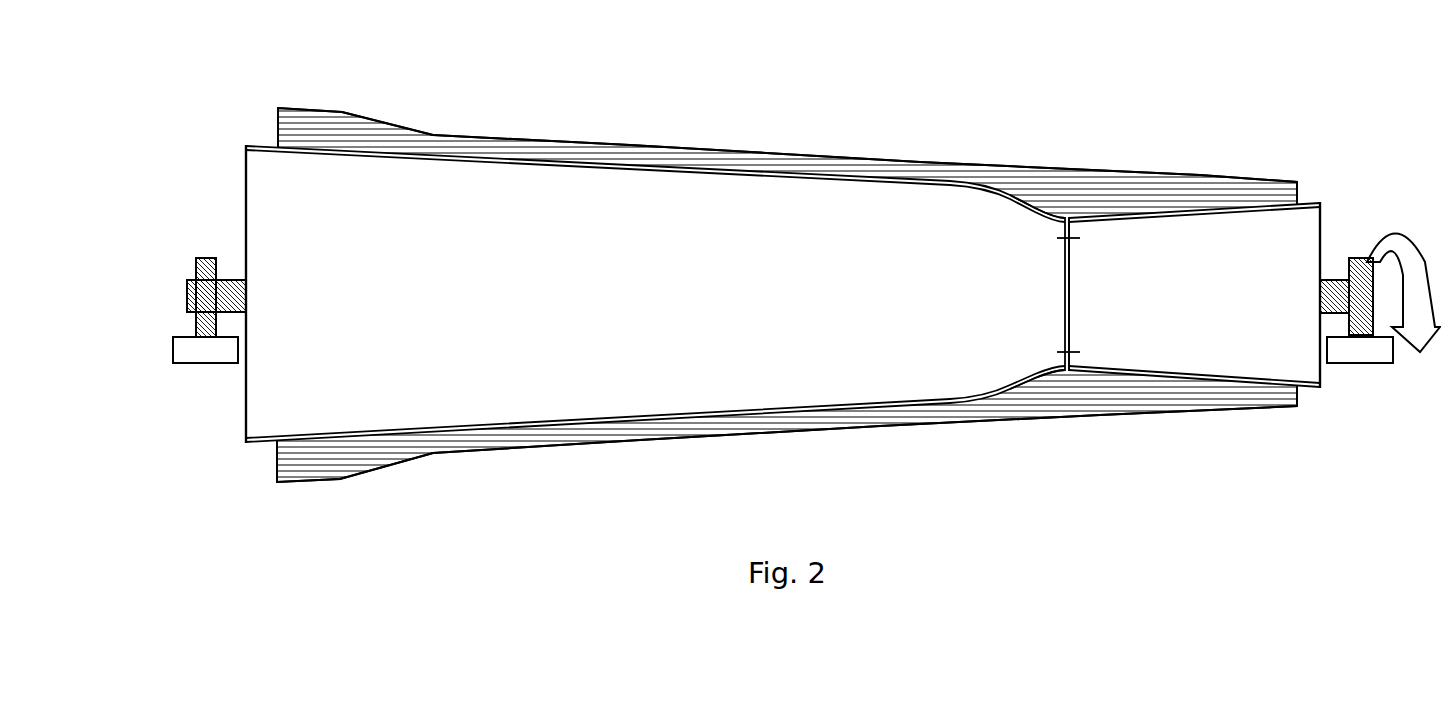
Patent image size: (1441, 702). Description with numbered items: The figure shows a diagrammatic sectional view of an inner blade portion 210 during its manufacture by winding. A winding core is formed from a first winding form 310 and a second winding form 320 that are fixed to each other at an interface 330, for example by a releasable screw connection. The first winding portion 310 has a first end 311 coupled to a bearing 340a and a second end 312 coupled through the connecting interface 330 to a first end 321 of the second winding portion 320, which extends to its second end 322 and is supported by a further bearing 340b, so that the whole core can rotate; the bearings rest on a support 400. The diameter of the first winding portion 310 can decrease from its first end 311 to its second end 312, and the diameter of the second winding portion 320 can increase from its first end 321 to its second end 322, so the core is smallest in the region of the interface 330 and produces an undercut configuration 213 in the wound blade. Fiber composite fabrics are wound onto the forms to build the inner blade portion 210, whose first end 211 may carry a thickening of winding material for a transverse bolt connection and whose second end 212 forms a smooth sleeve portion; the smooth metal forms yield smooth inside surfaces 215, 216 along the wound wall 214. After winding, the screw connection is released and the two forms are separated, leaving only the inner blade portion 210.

The inner blade portion 210 is at (527, 450).
The first end 211 is at (320, 108).
The second end 212 is at (1267, 182).
The undercut configuration 213 is at (1066, 190).
The upper cladding middle section 214 is at (732, 152).
The smooth inside surface 215 is at (488, 155).
The smooth inside surface 216 is at (1227, 388).
The first winding form 310 is at (509, 258).
The first end 311 is at (247, 397).
The second end 312 is at (1065, 312).
The second winding form 320 is at (1154, 292).
The first end 321 is at (1072, 275).
The second end 322 is at (1293, 372).
The interface 330 is at (1065, 358).
The bearing 340a is at (197, 260).
The further bearing 340b is at (1370, 258).
The support base 400 is at (173, 352).